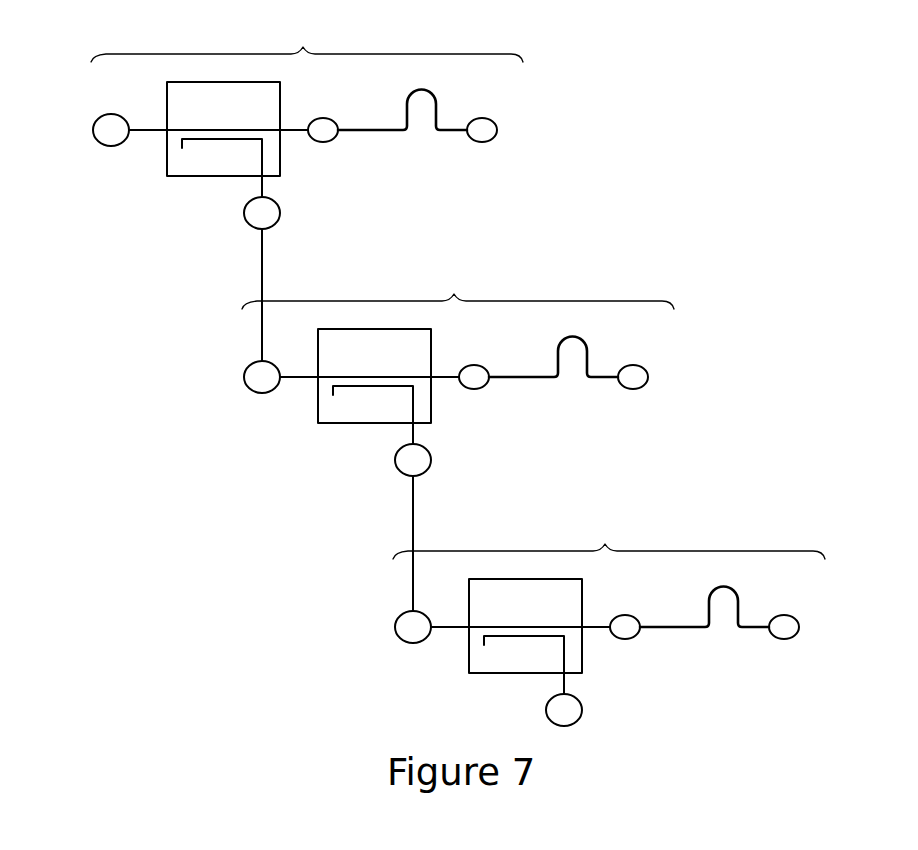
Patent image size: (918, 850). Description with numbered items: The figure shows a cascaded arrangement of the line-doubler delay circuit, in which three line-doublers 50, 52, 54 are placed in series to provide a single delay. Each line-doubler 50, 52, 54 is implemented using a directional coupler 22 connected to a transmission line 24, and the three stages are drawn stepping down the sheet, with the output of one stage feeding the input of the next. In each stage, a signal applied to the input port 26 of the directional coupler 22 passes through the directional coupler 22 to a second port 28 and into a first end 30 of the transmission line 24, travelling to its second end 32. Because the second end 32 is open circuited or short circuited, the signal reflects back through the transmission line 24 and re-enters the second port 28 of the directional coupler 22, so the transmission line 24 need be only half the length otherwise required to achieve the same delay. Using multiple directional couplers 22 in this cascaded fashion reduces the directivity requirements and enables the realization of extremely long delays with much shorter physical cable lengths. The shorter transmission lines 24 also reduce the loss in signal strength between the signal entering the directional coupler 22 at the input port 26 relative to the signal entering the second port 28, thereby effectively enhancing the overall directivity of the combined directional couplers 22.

The directional coupler 22 is at (167, 96).
The transmission line 24 is at (413, 92).
The input port 26 is at (99, 116).
The second port 28 is at (507, 394).
The first end 30 is at (325, 142).
The second end 32 is at (488, 142).
The line-doubler 50 is at (307, 78).
The line-doubler 52 is at (458, 325).
The line-doubler 54 is at (609, 575).